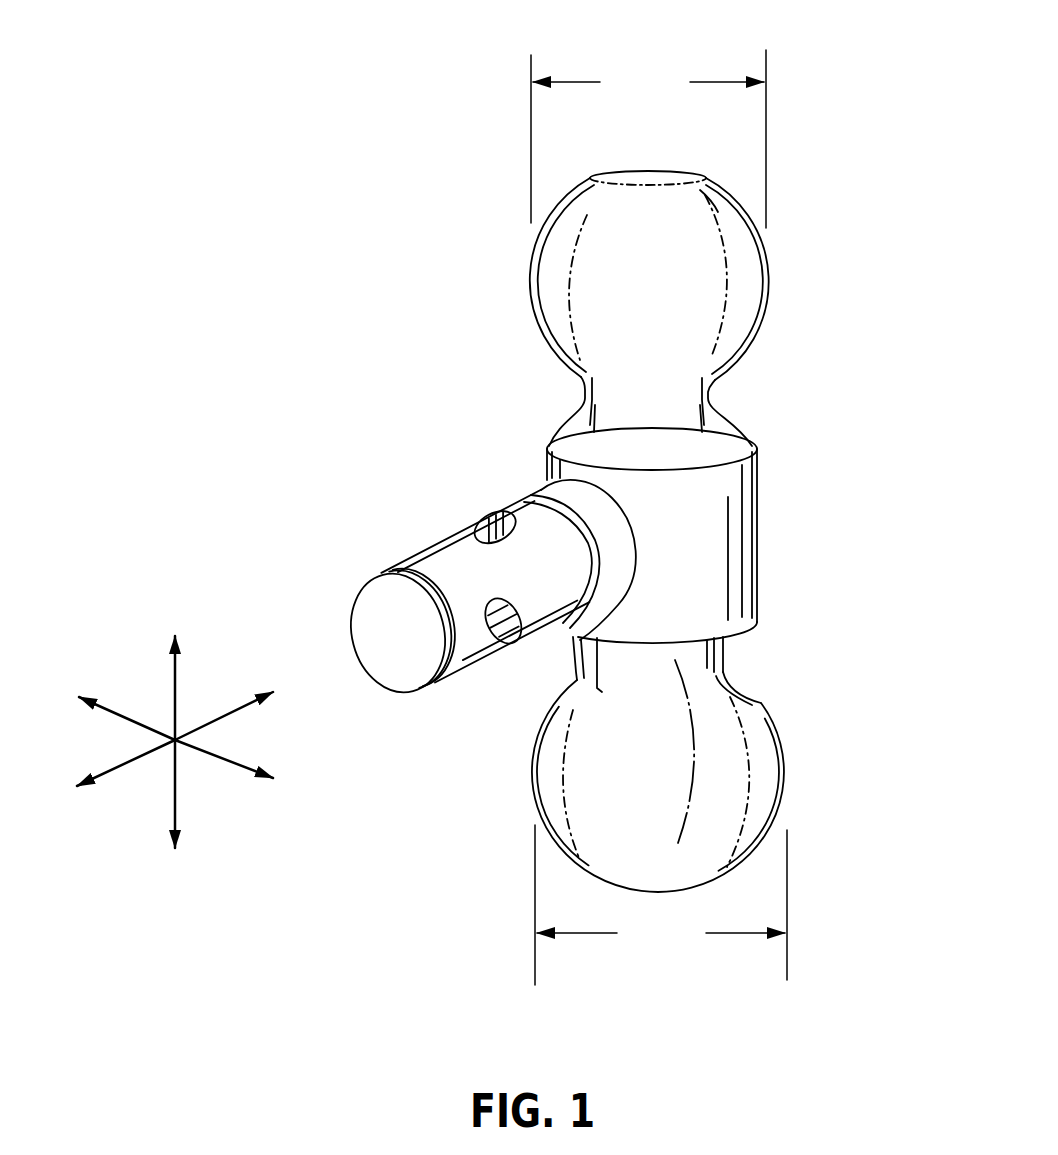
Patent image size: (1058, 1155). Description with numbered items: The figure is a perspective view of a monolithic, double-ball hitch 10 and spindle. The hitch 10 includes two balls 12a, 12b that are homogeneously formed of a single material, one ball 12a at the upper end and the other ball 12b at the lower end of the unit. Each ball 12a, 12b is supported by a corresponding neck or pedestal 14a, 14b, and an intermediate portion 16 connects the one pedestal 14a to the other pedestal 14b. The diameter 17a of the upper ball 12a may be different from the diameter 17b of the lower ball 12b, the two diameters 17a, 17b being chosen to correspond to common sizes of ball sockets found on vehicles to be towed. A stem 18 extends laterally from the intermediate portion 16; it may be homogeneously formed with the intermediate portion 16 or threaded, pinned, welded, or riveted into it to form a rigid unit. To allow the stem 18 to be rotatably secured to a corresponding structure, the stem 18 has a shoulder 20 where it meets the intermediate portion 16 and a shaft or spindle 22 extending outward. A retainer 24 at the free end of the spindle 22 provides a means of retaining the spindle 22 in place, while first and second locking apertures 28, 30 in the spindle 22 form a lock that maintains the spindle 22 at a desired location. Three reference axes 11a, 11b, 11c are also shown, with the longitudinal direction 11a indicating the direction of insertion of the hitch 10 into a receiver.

The hitch 10 is at (778, 137).
The longitudinal direction 11a is at (225, 717).
The second axis 11b is at (227, 763).
The third axis 11c is at (178, 672).
The ball 12a is at (716, 208).
The ball 12b is at (766, 774).
The neck 14a is at (673, 410).
The neck 14b is at (690, 662).
The intermediate portion 16 is at (733, 528).
The diameter 17a is at (648, 139).
The diameter 17b is at (661, 905).
The stem 18 is at (457, 619).
The shoulder 20 is at (620, 563).
The shaft 22 is at (488, 586).
The retainer 24 is at (397, 633).
The first locking aperture 28 is at (503, 620).
The second locking aperture 30 is at (495, 527).